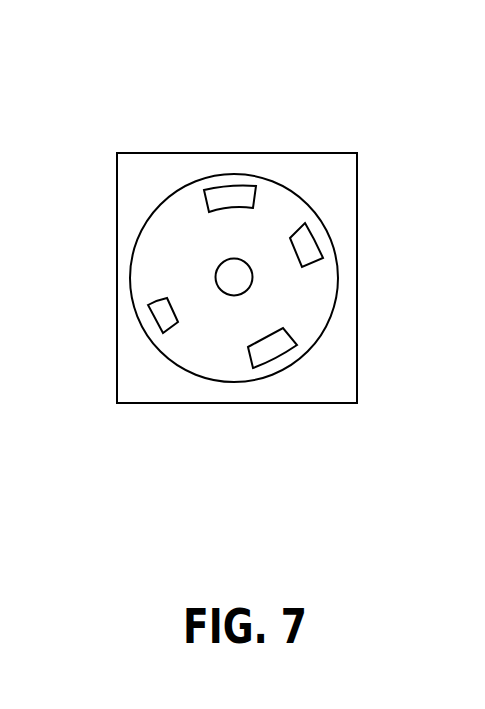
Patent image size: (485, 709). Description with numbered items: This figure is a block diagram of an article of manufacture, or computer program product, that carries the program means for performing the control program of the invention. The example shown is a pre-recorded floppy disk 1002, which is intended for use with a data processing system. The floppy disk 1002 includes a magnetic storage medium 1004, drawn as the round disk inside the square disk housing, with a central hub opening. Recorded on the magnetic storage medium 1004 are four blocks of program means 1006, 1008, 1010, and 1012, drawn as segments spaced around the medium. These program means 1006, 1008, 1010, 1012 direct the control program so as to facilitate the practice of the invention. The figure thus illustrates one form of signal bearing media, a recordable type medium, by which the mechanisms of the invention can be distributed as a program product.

The pre-recorded floppy disk 1002 is at (279, 101).
The magnetic storage medium 1004 is at (298, 289).
The program means 1006 is at (310, 243).
The program means 1008 is at (243, 195).
The program means 1010 is at (162, 315).
The program means 1012 is at (267, 352).